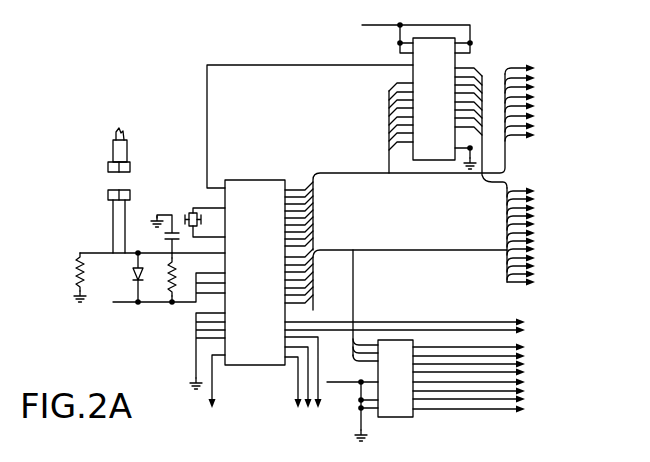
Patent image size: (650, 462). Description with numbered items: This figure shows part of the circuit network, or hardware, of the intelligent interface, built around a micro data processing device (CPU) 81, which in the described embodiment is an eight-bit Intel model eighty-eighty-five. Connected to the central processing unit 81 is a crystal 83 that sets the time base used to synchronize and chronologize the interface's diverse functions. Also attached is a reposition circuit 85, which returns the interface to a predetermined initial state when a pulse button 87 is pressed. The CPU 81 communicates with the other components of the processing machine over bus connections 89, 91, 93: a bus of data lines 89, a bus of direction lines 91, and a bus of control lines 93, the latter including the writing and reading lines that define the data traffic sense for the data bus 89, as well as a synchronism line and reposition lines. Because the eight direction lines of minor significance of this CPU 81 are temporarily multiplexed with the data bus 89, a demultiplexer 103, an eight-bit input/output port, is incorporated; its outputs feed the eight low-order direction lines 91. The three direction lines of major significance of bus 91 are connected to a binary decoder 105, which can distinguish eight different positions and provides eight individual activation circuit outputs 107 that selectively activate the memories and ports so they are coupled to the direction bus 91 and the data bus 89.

The micro data processing device (CPU) 81 is at (263, 187).
The crystal 83 is at (183, 198).
The reposition circuit 85 is at (101, 301).
The pulse button 87 is at (125, 141).
The data lines bus (D0-7) 89 is at (568, 52).
The direction lines bus (A0-10) 91 is at (568, 177).
The control lines bus 93 is at (332, 418).
The demultiplexer 103 is at (409, 71).
The binary decoder 105 is at (400, 417).
The activation circuit (CE) outputs 107 is at (568, 340).